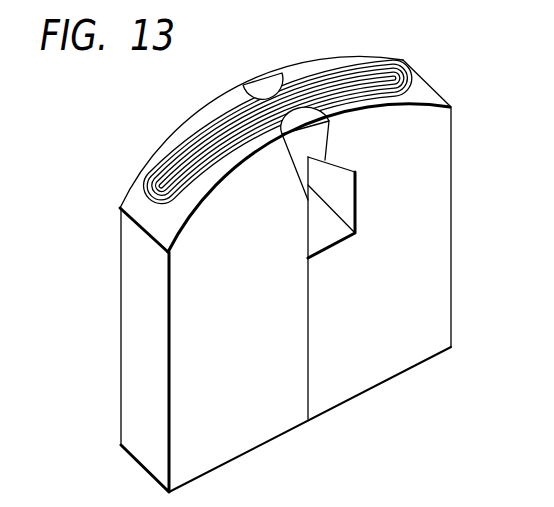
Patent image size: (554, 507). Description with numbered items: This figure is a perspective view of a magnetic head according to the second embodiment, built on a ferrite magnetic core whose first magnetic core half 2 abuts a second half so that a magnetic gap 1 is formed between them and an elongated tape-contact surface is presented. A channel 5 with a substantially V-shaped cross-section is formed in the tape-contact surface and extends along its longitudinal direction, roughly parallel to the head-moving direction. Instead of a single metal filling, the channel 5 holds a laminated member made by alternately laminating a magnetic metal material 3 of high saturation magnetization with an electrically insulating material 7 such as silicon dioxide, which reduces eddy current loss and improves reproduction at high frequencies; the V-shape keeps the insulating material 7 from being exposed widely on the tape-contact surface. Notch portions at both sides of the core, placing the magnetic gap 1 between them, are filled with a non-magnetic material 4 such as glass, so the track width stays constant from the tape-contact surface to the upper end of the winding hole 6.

The magnetic gap 1 is at (273, 135).
The first magnetic core half 2 is at (140, 183).
The magnetic metal material 3 is at (210, 137).
The non-magnetic material 4 is at (265, 85).
The channel 5 is at (156, 205).
The winding hole 6 is at (343, 193).
The electrically insulating material 7 is at (178, 152).